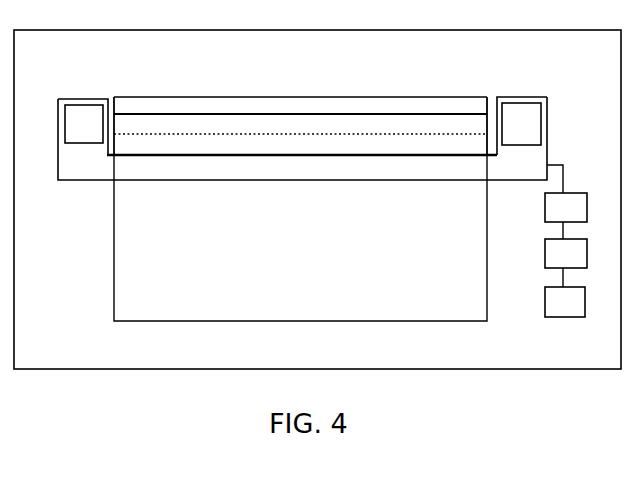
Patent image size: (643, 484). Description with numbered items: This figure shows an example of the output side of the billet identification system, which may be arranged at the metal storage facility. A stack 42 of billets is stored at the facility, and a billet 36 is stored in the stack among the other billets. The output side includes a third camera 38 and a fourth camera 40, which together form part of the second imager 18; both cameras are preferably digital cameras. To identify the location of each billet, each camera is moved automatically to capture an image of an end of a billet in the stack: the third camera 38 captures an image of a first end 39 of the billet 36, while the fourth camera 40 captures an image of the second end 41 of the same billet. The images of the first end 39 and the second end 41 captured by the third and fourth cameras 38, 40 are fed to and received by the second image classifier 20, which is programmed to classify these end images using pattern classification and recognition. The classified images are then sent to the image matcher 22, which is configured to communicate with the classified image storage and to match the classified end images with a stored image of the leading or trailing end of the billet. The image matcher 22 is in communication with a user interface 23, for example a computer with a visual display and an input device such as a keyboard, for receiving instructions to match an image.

The second imager 18 is at (306, 172).
The second image classifier 20 is at (566, 193).
The image matcher 22 is at (566, 245).
The user interface 23 is at (565, 292).
The billet 36 is at (294, 121).
The third camera 38 is at (83, 127).
The first end 39 is at (118, 112).
The fourth camera 40 is at (522, 126).
The second end 41 is at (485, 113).
The stack 42 is at (300, 238).